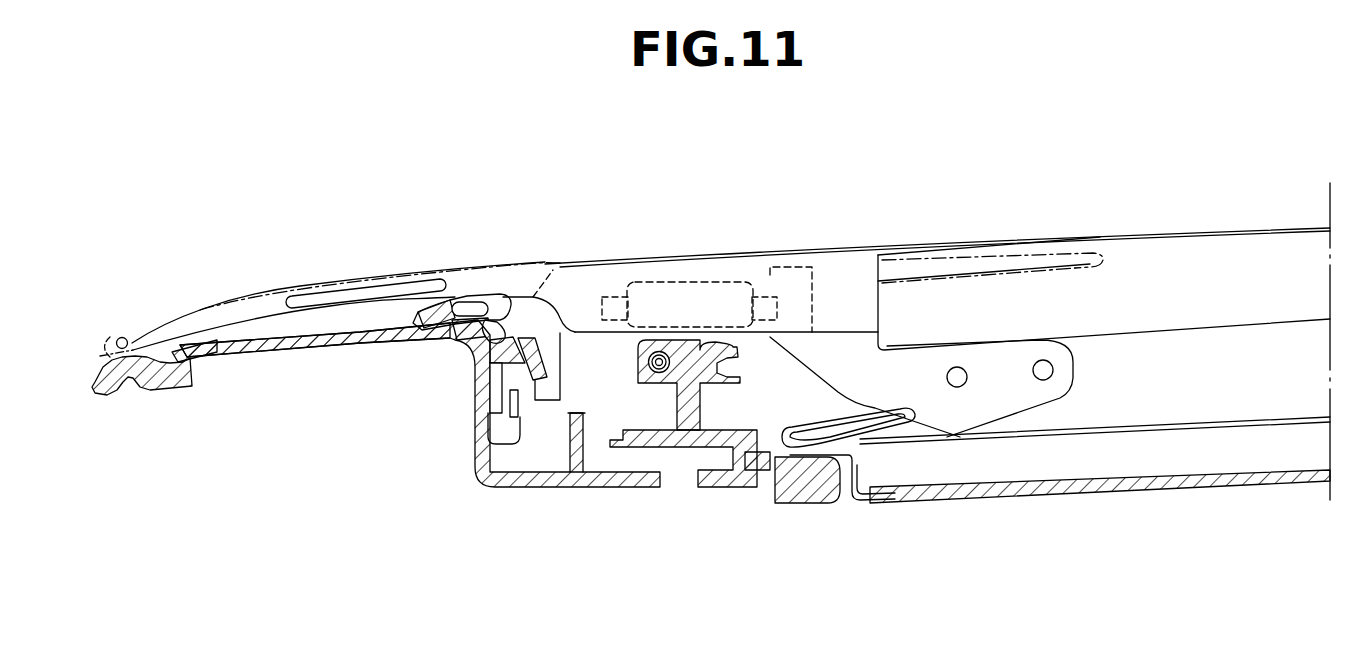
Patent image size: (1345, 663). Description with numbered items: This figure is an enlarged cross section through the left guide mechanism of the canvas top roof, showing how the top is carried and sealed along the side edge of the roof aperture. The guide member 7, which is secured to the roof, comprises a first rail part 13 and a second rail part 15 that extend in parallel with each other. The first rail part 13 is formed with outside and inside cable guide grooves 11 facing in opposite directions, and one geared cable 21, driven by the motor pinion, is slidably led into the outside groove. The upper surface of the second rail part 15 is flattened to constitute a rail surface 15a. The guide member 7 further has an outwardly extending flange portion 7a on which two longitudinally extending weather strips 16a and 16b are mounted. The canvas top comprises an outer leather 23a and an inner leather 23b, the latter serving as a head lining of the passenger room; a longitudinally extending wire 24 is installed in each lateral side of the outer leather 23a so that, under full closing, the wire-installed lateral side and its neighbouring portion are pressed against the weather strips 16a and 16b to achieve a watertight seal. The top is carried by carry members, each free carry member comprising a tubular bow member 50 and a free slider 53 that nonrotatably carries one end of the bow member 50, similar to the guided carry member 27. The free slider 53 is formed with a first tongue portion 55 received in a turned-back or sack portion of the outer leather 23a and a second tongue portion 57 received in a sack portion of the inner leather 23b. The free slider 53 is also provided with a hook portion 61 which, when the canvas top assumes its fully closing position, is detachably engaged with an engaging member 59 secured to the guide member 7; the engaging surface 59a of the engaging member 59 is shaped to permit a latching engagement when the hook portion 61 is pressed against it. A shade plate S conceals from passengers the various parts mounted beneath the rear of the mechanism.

The guide member 7 is at (736, 497).
The outwardly extending flange portion 7a is at (322, 348).
The cable guide groove 11 is at (643, 360).
The first rail part 13 is at (688, 340).
The second rail part 15 is at (584, 457).
The rail surface 15a is at (579, 412).
The weather strip 16a is at (140, 373).
The weather strip 16b is at (443, 293).
The geared cable 21 is at (653, 374).
The outer leather 23a is at (1111, 236).
The inner leather 23b is at (1163, 436).
The wire 24 is at (126, 338).
The guided carry member 27 is at (1218, 224).
The tubular bow member 50 is at (990, 287).
The free slider 53 is at (586, 287).
The first tongue portion 55 is at (330, 295).
The second tongue portion 57 is at (884, 430).
The engaging member 59 is at (518, 381).
The engaging surface 59a is at (480, 440).
The hook portion 61 is at (547, 402).
The shade plate S is at (1060, 480).